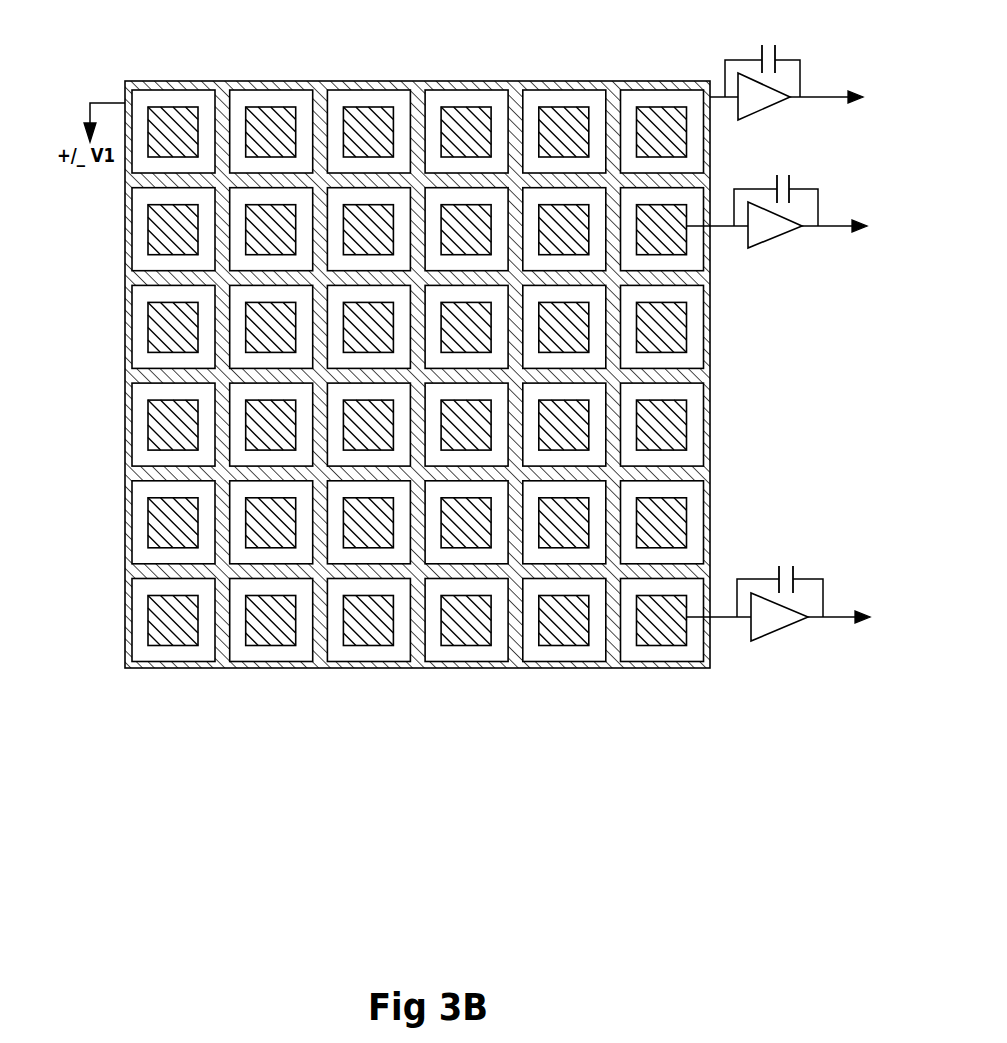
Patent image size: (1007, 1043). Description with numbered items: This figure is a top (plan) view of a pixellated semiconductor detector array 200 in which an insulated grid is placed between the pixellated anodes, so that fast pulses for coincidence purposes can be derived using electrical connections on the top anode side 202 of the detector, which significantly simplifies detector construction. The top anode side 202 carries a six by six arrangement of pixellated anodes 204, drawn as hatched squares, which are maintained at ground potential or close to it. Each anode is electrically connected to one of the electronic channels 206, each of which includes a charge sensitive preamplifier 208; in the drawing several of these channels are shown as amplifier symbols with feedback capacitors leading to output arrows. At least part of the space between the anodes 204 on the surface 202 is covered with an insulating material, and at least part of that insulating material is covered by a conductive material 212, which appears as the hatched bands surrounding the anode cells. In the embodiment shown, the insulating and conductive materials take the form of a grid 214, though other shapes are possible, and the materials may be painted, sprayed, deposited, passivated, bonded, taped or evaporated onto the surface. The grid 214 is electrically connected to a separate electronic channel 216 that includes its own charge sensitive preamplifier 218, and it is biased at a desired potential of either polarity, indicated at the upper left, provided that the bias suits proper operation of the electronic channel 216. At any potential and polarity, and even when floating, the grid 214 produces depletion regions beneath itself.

The pixellated semiconductor detector array 200 is at (425, 361).
The top anode side 202 is at (693, 550).
The pixellated anodes 204 is at (660, 422).
The electronic channels 206 is at (833, 220).
The charge sensitive preamplifiers 208 is at (768, 228).
The conductive material 212 is at (463, 361).
The grid 214 is at (418, 81).
The electronic channel 216 is at (805, 88).
The charge sensitive preamplifier 218 is at (752, 103).